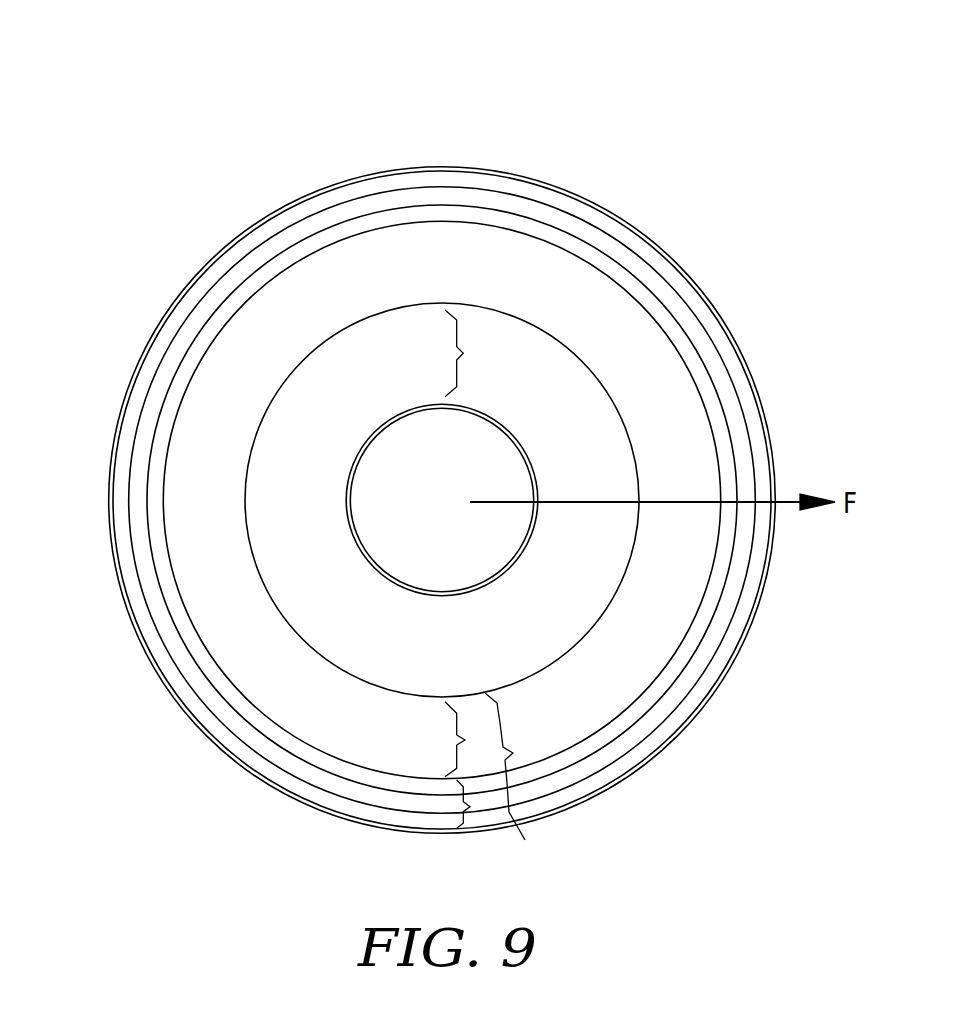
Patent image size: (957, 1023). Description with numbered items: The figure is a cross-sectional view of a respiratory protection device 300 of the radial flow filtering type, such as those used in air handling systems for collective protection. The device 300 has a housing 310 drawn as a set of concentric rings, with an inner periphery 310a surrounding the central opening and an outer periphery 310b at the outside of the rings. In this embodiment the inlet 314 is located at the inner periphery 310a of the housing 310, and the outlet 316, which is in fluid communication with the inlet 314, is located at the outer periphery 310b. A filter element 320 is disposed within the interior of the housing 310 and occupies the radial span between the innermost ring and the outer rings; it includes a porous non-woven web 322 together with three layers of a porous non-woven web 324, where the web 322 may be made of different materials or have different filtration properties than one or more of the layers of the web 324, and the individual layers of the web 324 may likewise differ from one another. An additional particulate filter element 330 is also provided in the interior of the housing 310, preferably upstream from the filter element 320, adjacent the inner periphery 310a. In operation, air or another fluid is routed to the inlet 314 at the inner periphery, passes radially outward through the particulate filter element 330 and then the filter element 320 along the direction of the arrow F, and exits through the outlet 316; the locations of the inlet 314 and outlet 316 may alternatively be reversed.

The respiratory protection device 300 is at (197, 85).
The housing 310 is at (377, 430).
The inner periphery 310a is at (353, 527).
The outer periphery 310b is at (145, 347).
The inlet 314 is at (404, 543).
The outlet 316 is at (737, 320).
The filter element 320 is at (513, 753).
The porous non-woven web 322 is at (465, 740).
The porous non-woven web 324 is at (470, 807).
The particulate filter element 330 is at (463, 353).